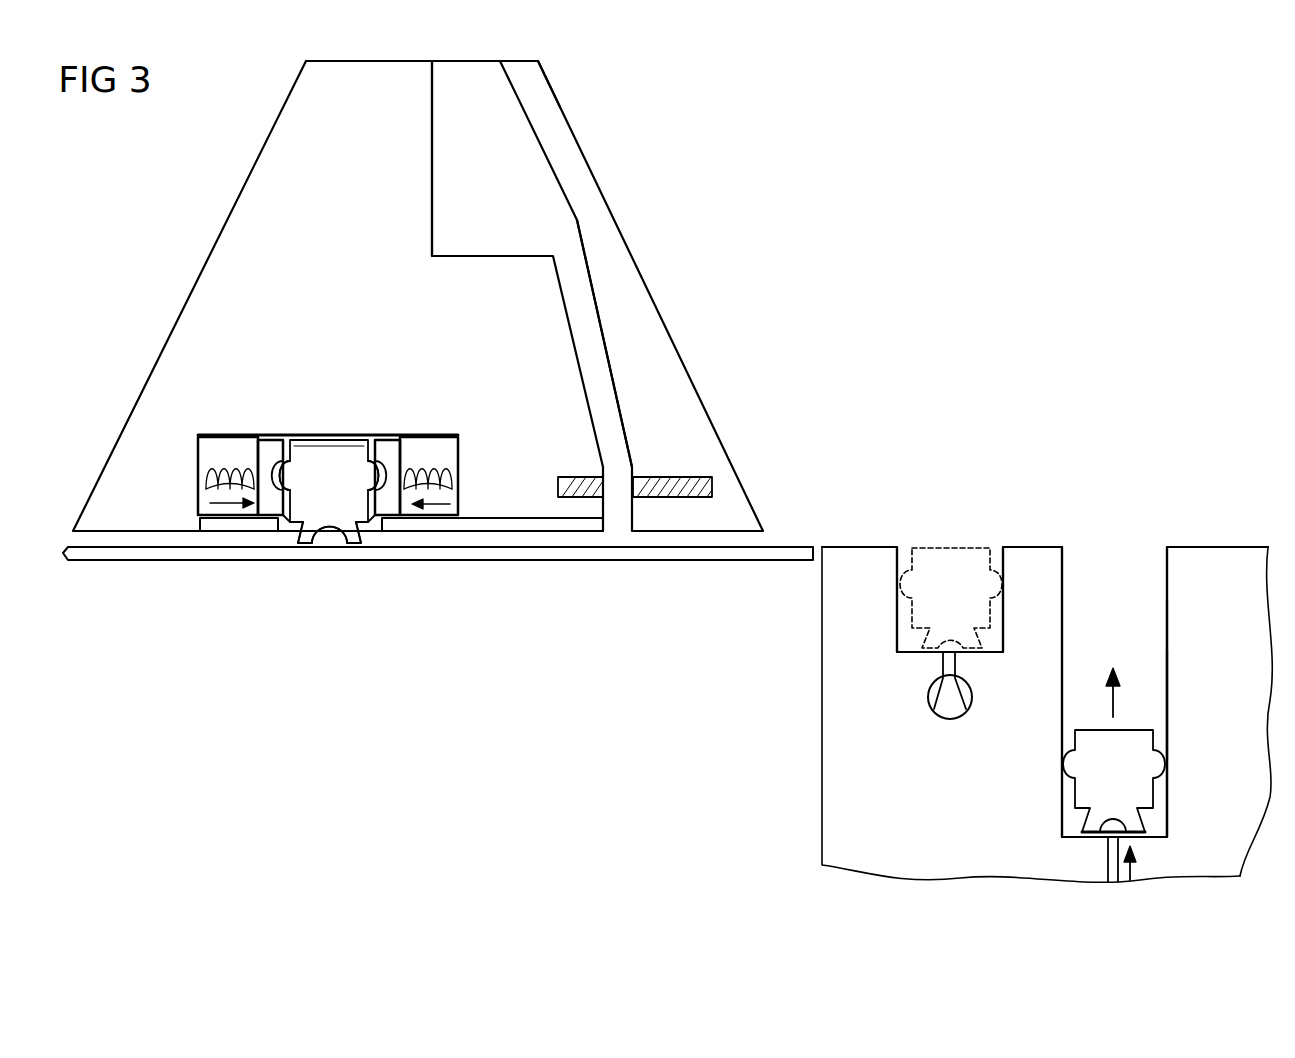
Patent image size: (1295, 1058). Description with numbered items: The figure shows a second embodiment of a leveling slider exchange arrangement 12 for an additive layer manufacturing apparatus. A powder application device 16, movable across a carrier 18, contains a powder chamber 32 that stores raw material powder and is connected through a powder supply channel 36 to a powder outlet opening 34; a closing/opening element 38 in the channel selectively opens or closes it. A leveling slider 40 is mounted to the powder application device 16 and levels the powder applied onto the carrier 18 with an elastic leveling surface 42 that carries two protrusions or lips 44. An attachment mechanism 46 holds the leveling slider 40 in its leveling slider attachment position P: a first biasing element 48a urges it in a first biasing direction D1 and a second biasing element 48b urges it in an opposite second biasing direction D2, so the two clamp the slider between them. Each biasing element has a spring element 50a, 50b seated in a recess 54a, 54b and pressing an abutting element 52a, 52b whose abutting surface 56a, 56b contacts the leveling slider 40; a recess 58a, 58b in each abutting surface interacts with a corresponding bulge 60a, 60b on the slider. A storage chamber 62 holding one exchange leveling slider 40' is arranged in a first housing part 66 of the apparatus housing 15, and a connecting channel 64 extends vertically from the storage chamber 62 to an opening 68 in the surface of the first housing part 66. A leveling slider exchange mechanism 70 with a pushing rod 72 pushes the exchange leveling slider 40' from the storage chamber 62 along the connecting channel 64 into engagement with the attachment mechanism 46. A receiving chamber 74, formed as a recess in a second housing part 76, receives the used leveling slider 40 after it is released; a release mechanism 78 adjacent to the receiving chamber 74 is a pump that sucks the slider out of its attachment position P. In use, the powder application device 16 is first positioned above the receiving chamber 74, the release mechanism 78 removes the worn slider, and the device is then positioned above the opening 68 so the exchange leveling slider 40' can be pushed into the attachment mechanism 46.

The leveling slider exchange arrangement 12 is at (785, 426).
The housing 15 is at (1200, 561).
The powder application device 16 is at (537, 73).
The carrier 18 is at (790, 556).
The powder chamber 32 is at (505, 128).
The powder outlet opening 34 is at (616, 532).
The powder supply channel 36 is at (597, 357).
The closing/opening element 38 is at (668, 477).
The leveling slider 40 is at (641, 510).
The exchange leveling slider 40' is at (1143, 781).
The leveling surface 42 is at (330, 541).
The protrusions or lips 44 is at (312, 548).
The attachment mechanism 46 is at (432, 420).
The first biasing element 48a is at (190, 474).
The second biasing element 48b is at (470, 466).
The spring element 50a is at (217, 462).
The spring element 50b is at (440, 462).
The abutting element 52a is at (268, 442).
The abutting element 52b is at (392, 442).
The recess 54a is at (198, 497).
The recess 54b is at (460, 496).
The abutting surface 56a is at (362, 535).
The abutting surface 56b is at (293, 535).
The recess 58a is at (292, 455).
The recess 58b is at (362, 455).
The protrusion or bulge 60a is at (296, 477).
The protrusion or bulge 60b is at (370, 487).
The storage chamber 62 is at (1075, 825).
The connecting channel 64 is at (1155, 697).
The first housing part 66 is at (1260, 753).
The opening 68 is at (1113, 566).
The leveling slider exchange mechanism 70 is at (1186, 656).
The pushing rod 72 is at (1108, 859).
The receiving chamber 74 is at (990, 637).
The second housing part 76 is at (969, 828).
The release mechanism 78 is at (948, 721).
The first biasing direction D1 is at (222, 506).
The second biasing direction D2 is at (455, 512).
The leveling slider attachment position P is at (388, 554).